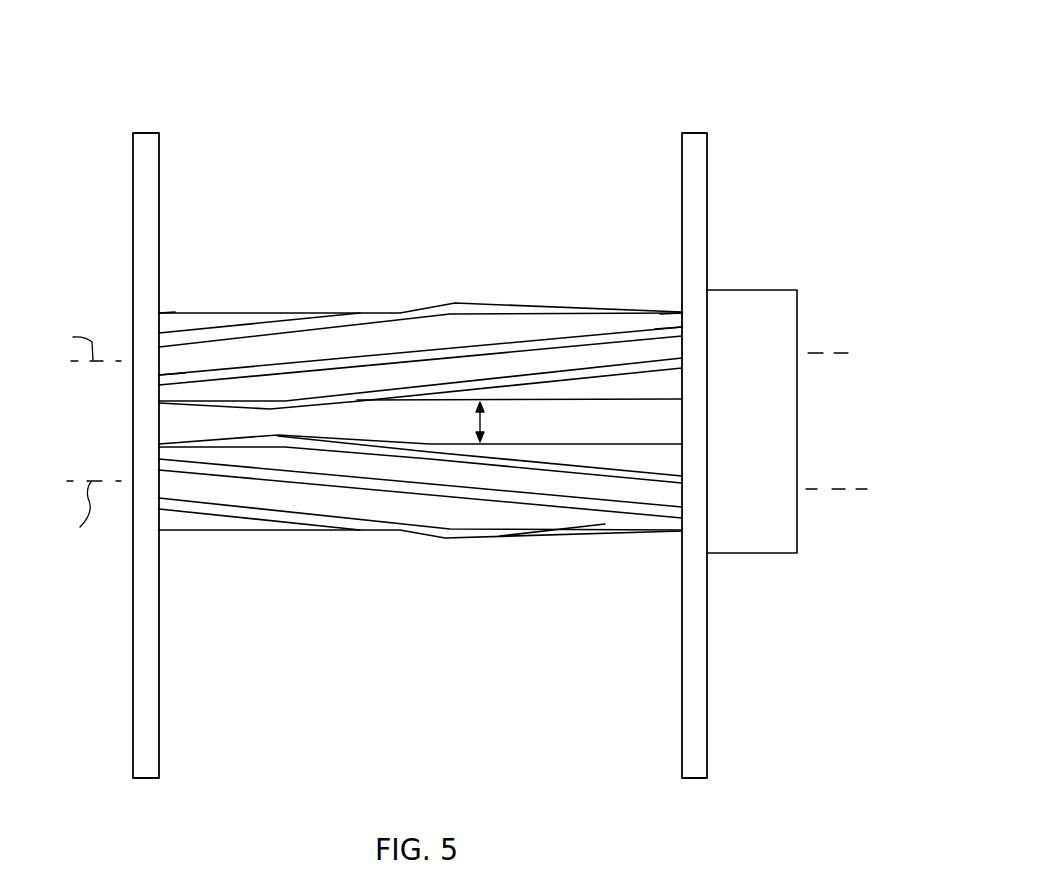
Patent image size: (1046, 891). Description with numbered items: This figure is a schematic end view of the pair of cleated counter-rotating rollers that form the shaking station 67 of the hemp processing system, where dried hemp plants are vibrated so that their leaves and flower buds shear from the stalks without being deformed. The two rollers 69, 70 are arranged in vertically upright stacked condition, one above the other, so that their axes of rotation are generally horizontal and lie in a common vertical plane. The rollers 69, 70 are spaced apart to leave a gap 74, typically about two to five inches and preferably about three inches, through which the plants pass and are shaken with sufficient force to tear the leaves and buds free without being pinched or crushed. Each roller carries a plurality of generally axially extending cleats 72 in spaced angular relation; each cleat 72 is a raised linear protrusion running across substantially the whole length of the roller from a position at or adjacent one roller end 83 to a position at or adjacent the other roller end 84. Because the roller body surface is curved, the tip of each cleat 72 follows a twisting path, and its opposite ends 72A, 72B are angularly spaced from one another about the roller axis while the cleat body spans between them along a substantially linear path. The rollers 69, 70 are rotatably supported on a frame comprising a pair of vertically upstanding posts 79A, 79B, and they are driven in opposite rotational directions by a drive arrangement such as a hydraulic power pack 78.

The system station 67 is at (108, 86).
The counter-rotating roller 69 is at (208, 312).
The counter-rotating roller 70 is at (201, 534).
The cleat 72 is at (603, 513).
The cleat end 72A is at (158, 379).
The cleat end 72B is at (684, 330).
The gap 74 is at (482, 423).
The hydraulic power pack 78 is at (784, 310).
The vertically upstanding post 79A is at (134, 216).
The vertically upstanding post 79B is at (711, 175).
The roller end 83 is at (158, 325).
The roller end 84 is at (684, 317).